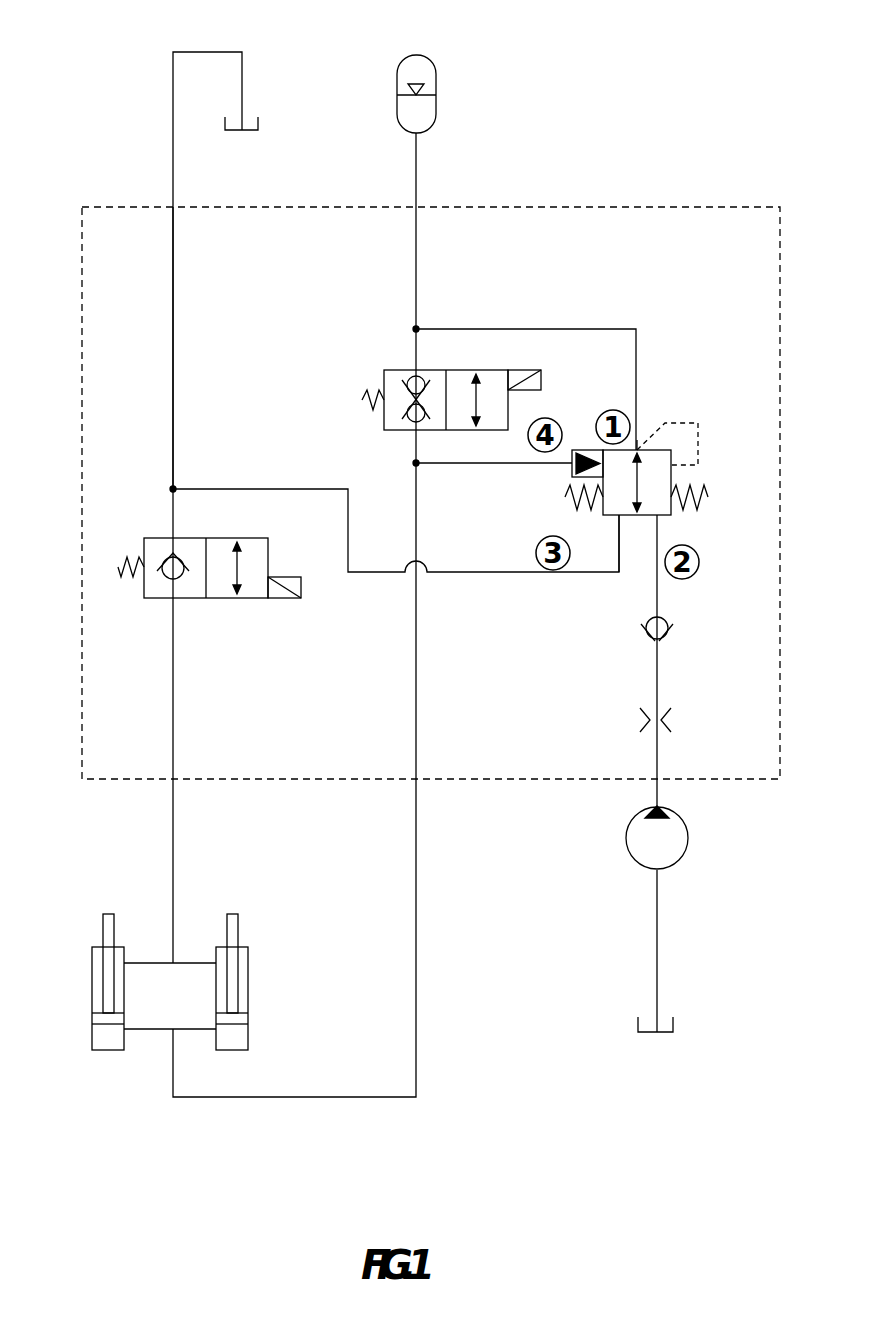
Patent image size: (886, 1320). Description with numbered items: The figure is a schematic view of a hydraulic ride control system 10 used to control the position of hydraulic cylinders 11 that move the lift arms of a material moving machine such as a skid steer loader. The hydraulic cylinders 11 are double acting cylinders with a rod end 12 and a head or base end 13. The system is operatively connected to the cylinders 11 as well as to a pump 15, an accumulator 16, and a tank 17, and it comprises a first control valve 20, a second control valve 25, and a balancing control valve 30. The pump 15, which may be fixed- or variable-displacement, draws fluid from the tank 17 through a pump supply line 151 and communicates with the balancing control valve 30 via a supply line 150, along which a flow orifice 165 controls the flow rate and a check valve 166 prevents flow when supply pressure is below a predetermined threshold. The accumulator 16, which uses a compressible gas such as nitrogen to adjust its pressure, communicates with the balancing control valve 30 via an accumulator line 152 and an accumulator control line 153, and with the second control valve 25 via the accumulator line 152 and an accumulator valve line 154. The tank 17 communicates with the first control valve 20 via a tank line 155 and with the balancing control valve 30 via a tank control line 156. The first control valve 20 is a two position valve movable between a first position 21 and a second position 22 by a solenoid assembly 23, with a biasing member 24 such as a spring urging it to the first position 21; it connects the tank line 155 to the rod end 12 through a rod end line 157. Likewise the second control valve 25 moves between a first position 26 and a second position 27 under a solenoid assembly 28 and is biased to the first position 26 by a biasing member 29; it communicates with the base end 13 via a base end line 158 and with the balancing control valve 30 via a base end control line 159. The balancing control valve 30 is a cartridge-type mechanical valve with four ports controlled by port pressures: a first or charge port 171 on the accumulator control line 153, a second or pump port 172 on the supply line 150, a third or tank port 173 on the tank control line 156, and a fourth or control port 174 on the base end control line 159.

The hydraulic ride control system 10 is at (633, 207).
The hydraulic cylinder 11 is at (92, 992).
The rod end 12 is at (98, 957).
The base end 13 is at (92, 1037).
The pump 15 is at (688, 843).
The accumulator 16 is at (432, 57).
The tank 17 is at (247, 131).
The first control valve 20 is at (212, 542).
The first position 21 is at (157, 595).
The second position 22 is at (220, 595).
The solenoid assembly 23 is at (278, 600).
The biasing member 24 is at (120, 567).
The second control valve 25 is at (457, 370).
The first position 26 is at (393, 428).
The second position 27 is at (460, 425).
The solenoid assembly 28 is at (540, 382).
The biasing member 29 is at (362, 399).
The balancing control valve 30 is at (670, 478).
The supply line 150 is at (657, 588).
The pump supply line 151 is at (657, 922).
The accumulator line 152 is at (417, 170).
The accumulator control line 153 is at (572, 329).
The accumulator valve line 154 is at (415, 347).
The tank line 155 is at (173, 272).
The tank control line 156 is at (487, 572).
The rod end line 157 is at (173, 858).
The base end line 158 is at (416, 733).
The base end control line 159 is at (487, 465).
The flow orifice 165 is at (667, 725).
The check valve 166 is at (660, 640).
The first port 171 is at (640, 448).
The second port 172 is at (657, 517).
The third port 173 is at (619, 517).
The fourth port 174 is at (562, 472).